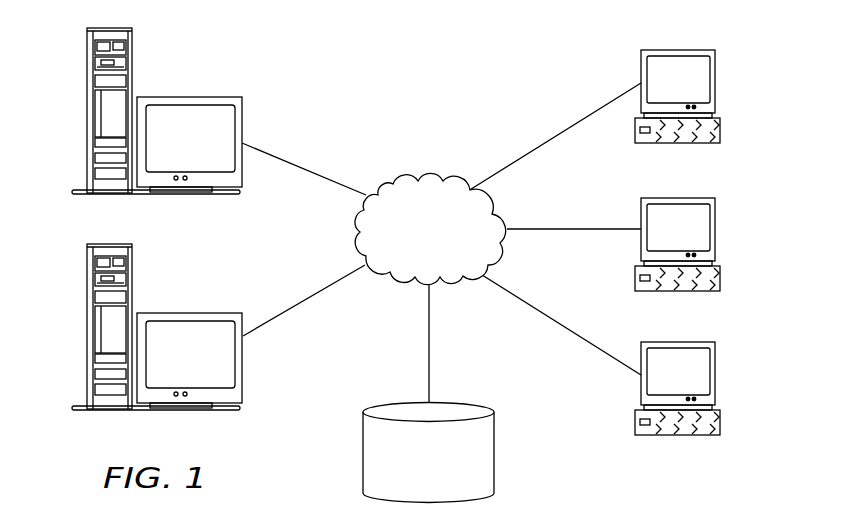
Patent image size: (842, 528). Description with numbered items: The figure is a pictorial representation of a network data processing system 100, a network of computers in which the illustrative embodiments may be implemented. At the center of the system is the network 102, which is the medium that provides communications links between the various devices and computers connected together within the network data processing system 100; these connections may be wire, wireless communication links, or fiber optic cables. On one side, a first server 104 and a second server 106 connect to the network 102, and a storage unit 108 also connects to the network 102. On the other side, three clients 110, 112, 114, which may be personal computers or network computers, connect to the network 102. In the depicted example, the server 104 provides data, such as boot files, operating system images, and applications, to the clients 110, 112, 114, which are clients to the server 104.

The network data processing system 100 is at (318, 89).
The network 102 is at (400, 177).
The server 104 is at (88, 113).
The server 106 is at (89, 335).
The storage unit 108 is at (393, 403).
The client 110 is at (715, 80).
The client 112 is at (715, 230).
The client 114 is at (715, 375).